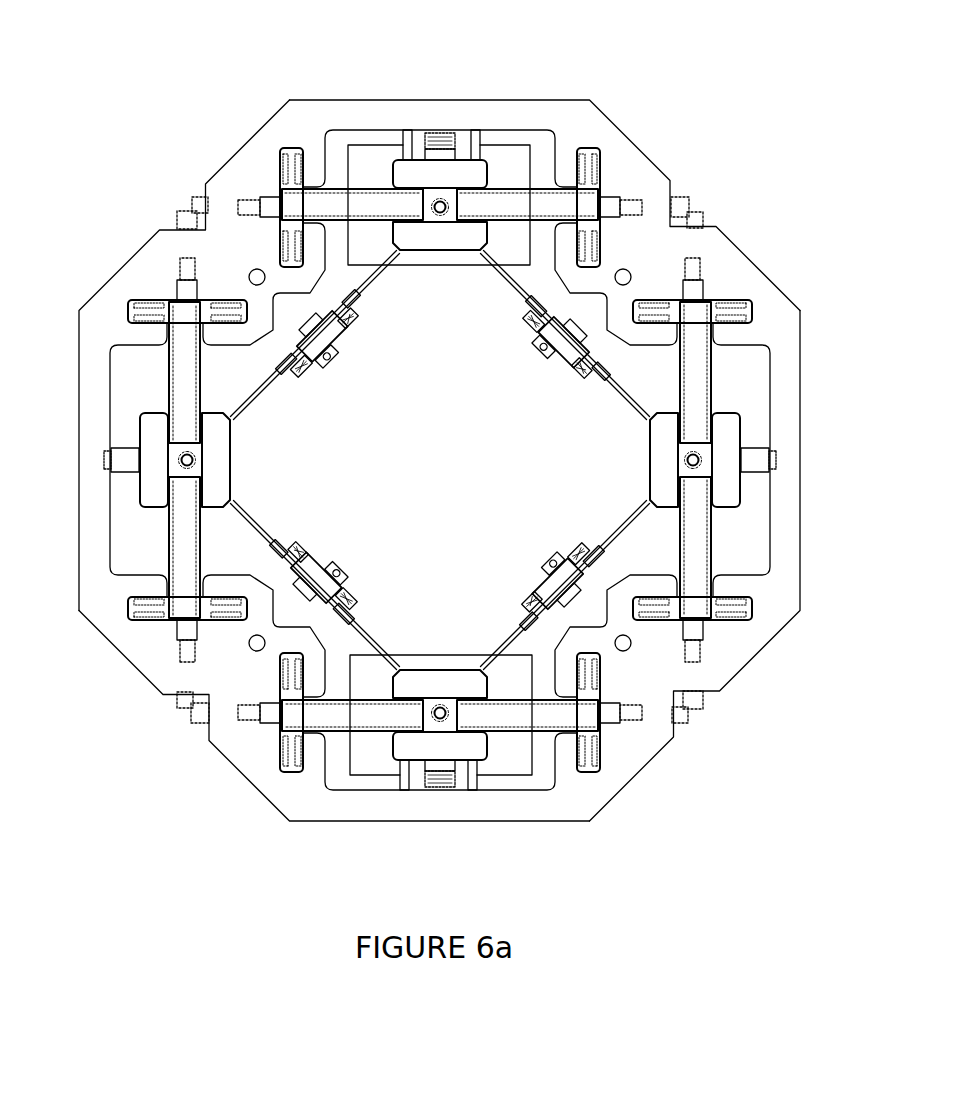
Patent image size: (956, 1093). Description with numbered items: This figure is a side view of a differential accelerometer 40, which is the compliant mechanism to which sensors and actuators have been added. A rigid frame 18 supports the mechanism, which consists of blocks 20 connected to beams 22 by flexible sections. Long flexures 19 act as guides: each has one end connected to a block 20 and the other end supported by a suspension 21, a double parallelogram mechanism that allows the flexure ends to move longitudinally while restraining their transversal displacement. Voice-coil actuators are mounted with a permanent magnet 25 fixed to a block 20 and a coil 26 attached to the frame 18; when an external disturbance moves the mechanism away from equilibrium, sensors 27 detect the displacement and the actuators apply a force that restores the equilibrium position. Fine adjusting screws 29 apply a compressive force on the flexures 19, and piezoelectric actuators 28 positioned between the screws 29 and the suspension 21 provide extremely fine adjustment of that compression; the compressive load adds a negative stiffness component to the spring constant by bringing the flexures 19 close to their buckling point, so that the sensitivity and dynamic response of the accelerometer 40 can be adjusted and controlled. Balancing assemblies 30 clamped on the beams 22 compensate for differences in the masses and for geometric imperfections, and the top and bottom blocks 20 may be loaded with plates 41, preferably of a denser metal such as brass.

The rigid frame 18 is at (135, 262).
The long flexures 19 is at (513, 190).
The blocks 20 is at (438, 237).
The suspensions 21 is at (592, 152).
The beams 22 is at (278, 542).
The permanent magnet 25 is at (443, 152).
The coil 26 is at (438, 137).
The sensors 27 is at (405, 145).
The piezoelectric actuators 28 is at (607, 198).
The fine adjusting screws 29 is at (683, 198).
The balancing assemblies 30 is at (345, 570).
The differential accelerometer 40 is at (419, 414).
The plates 41 is at (475, 658).